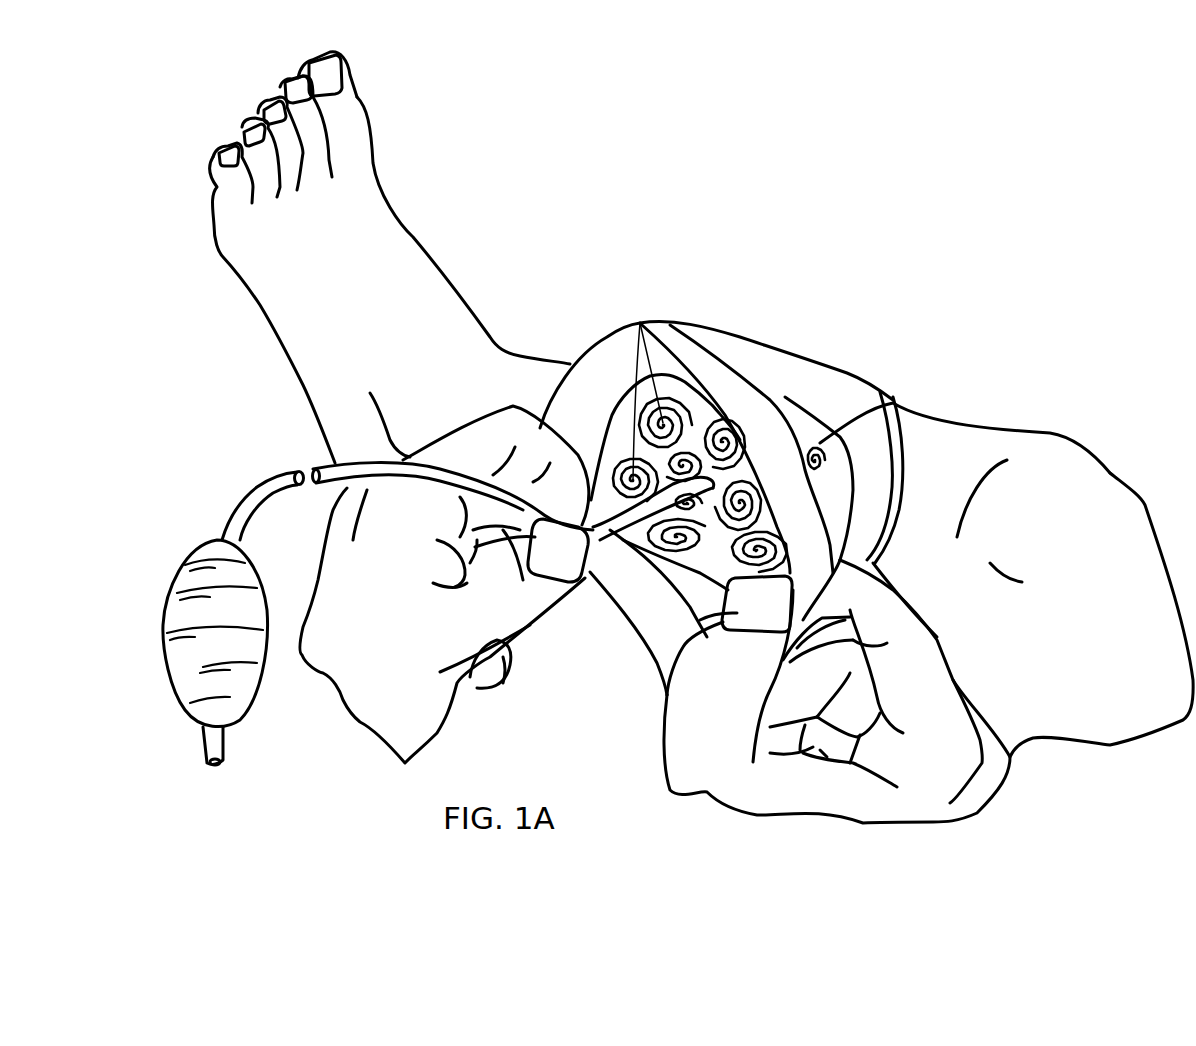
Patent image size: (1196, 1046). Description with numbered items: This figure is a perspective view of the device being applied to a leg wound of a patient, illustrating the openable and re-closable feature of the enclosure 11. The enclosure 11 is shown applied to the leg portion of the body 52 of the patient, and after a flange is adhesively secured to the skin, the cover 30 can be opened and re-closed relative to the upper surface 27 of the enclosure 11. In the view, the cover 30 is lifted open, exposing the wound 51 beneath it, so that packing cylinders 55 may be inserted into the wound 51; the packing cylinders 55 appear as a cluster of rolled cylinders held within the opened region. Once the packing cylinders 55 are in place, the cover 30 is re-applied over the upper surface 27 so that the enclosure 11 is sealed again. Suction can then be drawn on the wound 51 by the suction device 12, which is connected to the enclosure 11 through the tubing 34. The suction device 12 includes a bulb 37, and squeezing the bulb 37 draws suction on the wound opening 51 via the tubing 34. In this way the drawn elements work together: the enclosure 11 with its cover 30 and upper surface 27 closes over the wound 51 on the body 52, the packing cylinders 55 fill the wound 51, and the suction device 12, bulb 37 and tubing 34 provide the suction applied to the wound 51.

The enclosure 11 is at (877, 497).
The suction device 12 is at (200, 545).
The upper surface 27 is at (854, 406).
The cover 30 is at (715, 358).
The tubing 34 is at (328, 462).
The bulb 37 is at (262, 650).
The wound 51 is at (893, 404).
The body 52 is at (967, 437).
The packing cylinders 55 is at (640, 323).